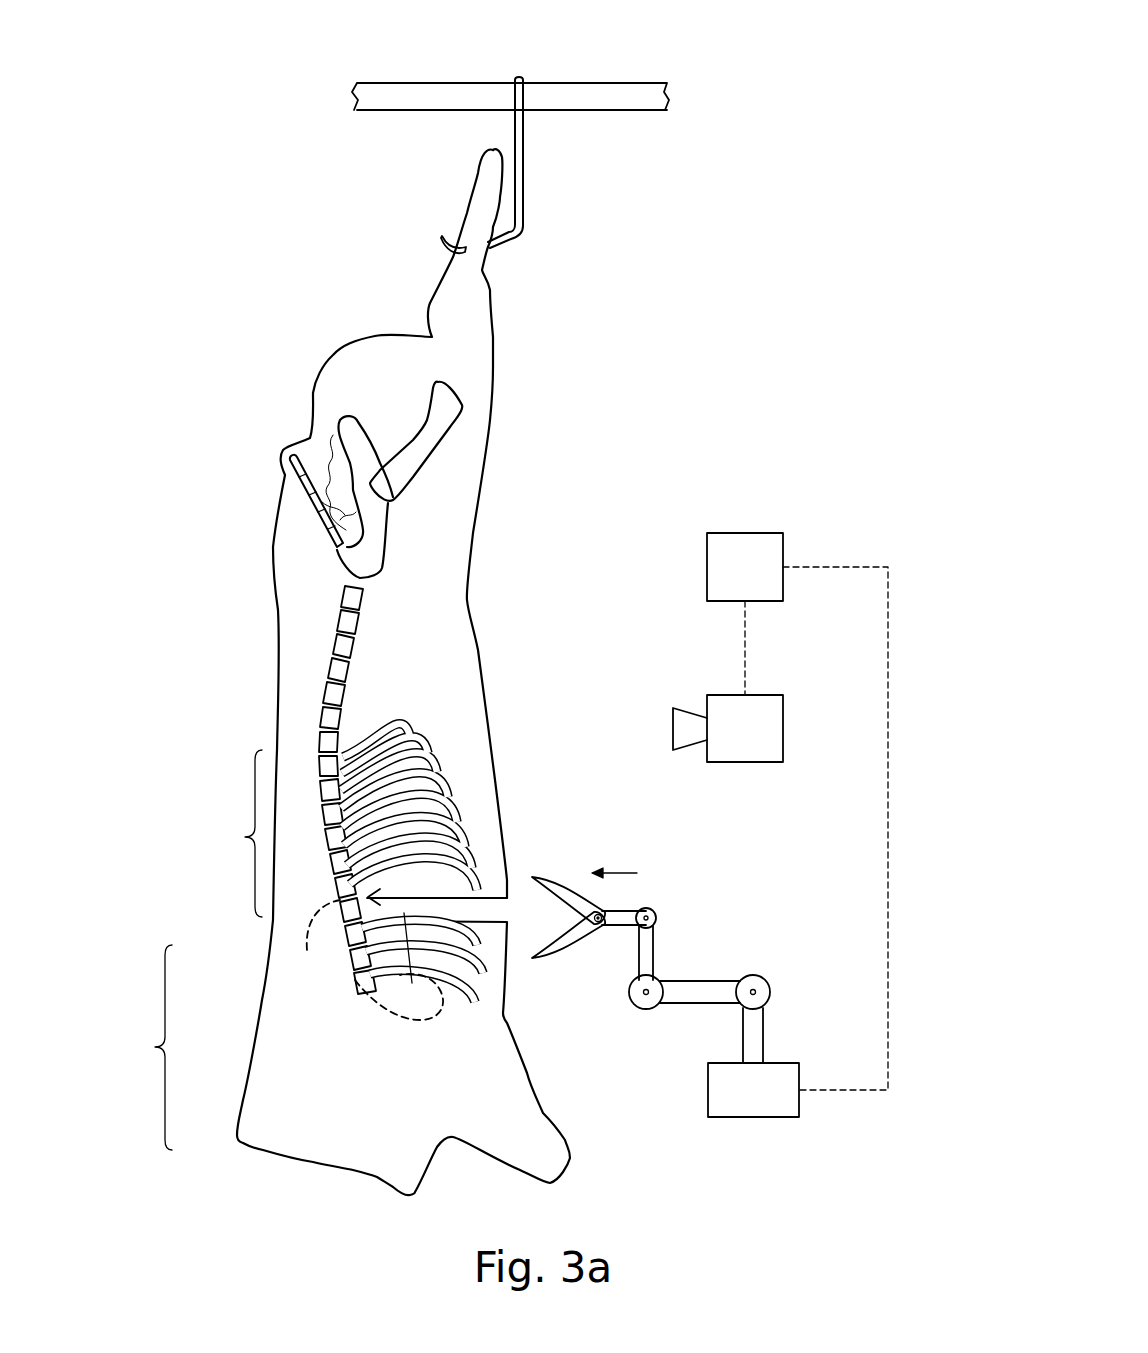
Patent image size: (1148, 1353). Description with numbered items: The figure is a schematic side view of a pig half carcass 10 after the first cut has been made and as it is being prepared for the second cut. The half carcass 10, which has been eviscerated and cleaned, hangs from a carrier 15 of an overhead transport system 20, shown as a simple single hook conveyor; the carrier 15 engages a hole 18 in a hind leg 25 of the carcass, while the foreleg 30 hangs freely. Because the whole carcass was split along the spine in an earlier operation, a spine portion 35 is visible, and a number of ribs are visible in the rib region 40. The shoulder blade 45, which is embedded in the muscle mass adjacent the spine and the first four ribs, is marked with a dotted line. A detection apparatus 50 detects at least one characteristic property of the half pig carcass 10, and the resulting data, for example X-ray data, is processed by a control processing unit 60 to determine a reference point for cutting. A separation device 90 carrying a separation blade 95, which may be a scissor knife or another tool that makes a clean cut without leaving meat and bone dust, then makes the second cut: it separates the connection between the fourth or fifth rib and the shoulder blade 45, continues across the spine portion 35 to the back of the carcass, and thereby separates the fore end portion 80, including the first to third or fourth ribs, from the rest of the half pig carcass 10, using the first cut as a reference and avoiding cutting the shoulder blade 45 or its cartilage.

The pig half carcass 10 is at (570, 582).
The carrier 15 is at (527, 143).
The hole 18 is at (456, 240).
The overhead transport system 20 is at (628, 98).
The hind leg 25 is at (473, 276).
The foreleg 30 is at (533, 1127).
The spine portion 35 is at (350, 640).
The rib region 40 is at (245, 837).
The shoulder blade 45 is at (340, 978).
The detection apparatus 50 is at (728, 728).
The control processing unit 60 is at (797, 811).
The fore end portion 80 is at (155, 1047).
The separation device 90 is at (737, 948).
The separation blade 95 is at (643, 898).